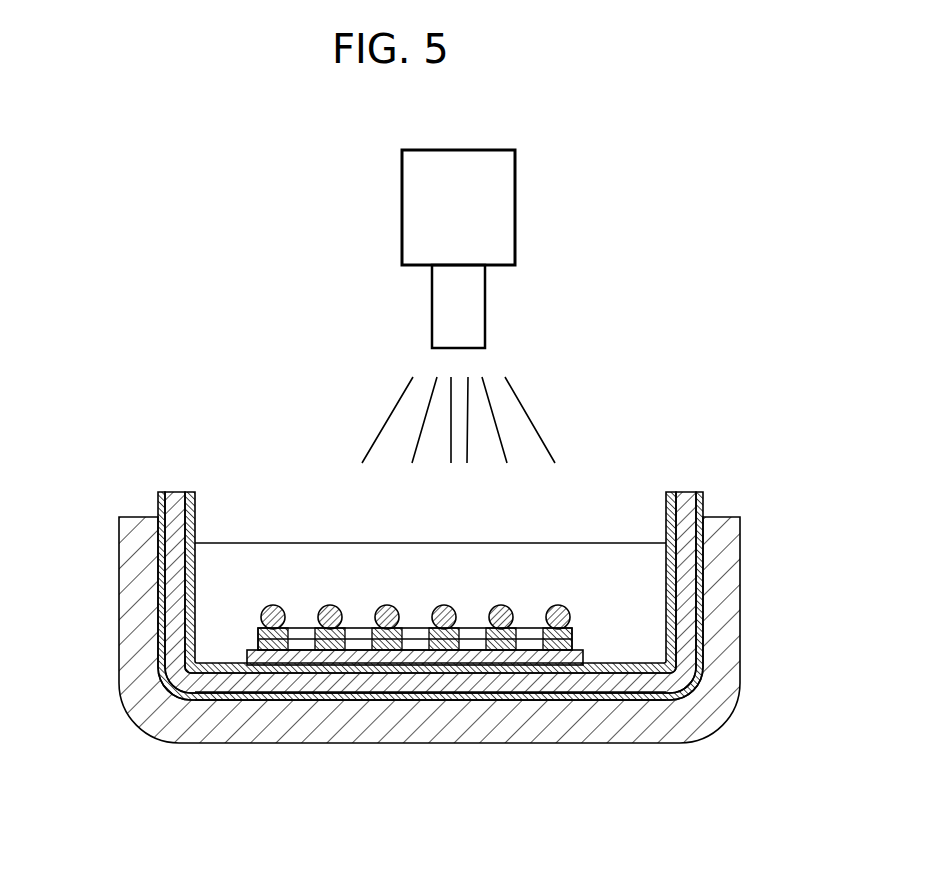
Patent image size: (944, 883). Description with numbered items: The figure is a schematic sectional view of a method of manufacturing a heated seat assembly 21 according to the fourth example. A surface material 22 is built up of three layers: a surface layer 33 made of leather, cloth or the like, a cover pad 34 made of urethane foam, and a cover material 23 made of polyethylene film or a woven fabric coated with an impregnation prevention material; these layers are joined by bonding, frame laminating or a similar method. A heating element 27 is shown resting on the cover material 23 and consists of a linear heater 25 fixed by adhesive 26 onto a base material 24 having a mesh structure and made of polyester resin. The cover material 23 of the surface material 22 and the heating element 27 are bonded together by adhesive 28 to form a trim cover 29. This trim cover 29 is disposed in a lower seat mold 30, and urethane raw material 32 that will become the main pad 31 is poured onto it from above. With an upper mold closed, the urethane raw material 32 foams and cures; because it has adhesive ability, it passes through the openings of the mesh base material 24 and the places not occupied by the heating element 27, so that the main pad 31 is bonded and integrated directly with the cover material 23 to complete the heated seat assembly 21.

The heated seat assembly 21 is at (702, 495).
The surface material 22 is at (83, 310).
The cover material 23 is at (195, 492).
The base material 24 is at (583, 660).
The linear heater 25 is at (569, 617).
The adhesive 26 is at (573, 640).
The heating element 27 is at (792, 608).
The adhesive 28 is at (593, 697).
The trim cover 29 is at (511, 690).
The lower seat mold 30 is at (340, 737).
The main pad 31 is at (648, 566).
The urethane raw material 32 is at (532, 417).
The surface layer 33 is at (161, 492).
The cover pad 34 is at (175, 492).